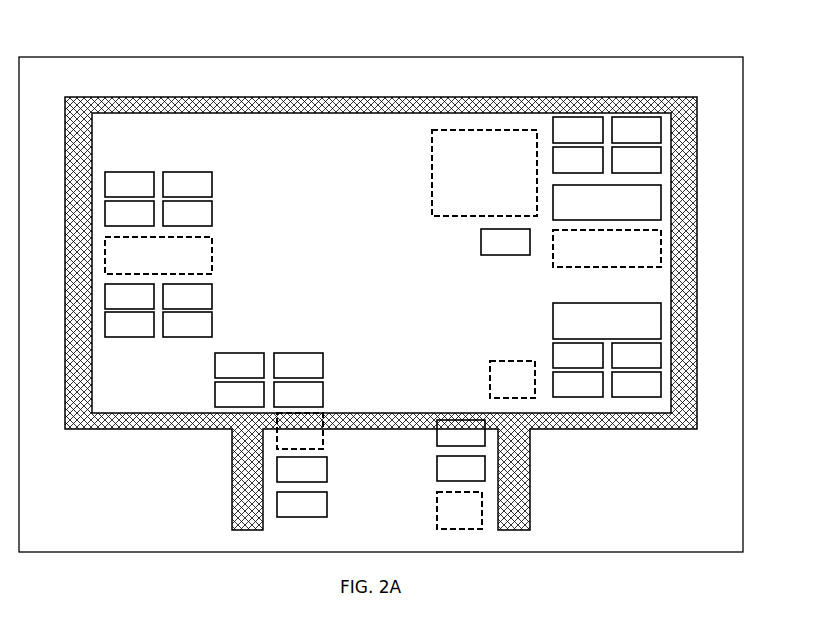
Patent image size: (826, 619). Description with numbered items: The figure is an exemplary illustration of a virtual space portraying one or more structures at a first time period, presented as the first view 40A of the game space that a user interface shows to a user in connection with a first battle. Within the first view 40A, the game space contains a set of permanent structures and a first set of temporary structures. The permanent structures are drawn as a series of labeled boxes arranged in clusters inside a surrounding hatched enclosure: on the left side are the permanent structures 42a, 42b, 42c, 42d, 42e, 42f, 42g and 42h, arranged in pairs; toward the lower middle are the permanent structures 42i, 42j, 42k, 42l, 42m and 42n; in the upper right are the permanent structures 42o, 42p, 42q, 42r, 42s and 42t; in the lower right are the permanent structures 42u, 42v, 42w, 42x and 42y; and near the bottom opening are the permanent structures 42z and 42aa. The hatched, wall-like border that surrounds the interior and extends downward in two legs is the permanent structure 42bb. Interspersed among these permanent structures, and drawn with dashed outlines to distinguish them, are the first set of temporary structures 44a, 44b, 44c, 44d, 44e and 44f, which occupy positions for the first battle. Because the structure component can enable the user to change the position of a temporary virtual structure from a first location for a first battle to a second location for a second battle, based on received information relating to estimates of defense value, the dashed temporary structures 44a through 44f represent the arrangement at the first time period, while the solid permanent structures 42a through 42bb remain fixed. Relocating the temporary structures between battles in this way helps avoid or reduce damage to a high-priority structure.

The first view 40A is at (446, 50).
The permanent structure 42a is at (129, 184).
The permanent structure 42b is at (187, 184).
The permanent structure 42c is at (129, 213).
The permanent structure 42d is at (187, 213).
The permanent structure 42e is at (129, 296).
The permanent structure 42f is at (187, 296).
The permanent structure 42g is at (129, 324).
The permanent structure 42h is at (187, 324).
The permanent structure 42i is at (239, 365).
The permanent structure 42j is at (298, 365).
The permanent structure 42k is at (239, 394).
The permanent structure 42l is at (298, 394).
The permanent structure 42m is at (302, 469).
The permanent structure 42n is at (302, 504).
The permanent structure 42o is at (578, 130).
The permanent structure 42p is at (636, 130).
The permanent structure 42q is at (578, 160).
The permanent structure 42r is at (636, 160).
The permanent structure 42s is at (607, 202).
The permanent structure 42t is at (505, 242).
The permanent structure 42u is at (607, 321).
The permanent structure 42v is at (578, 355).
The permanent structure 42w is at (636, 355).
The permanent structure 42x is at (578, 384).
The permanent structure 42y is at (636, 384).
The permanent structure 42z is at (461, 433).
The permanent structure 42aa is at (461, 468).
The permanent structure 42bb is at (697, 170).
The temporary structure 44a is at (158, 255).
The temporary structure 44b is at (300, 431).
The temporary structure 44c is at (484, 173).
The temporary structure 44d is at (607, 248).
The temporary structure 44e is at (512, 379).
The temporary structure 44f is at (459, 510).